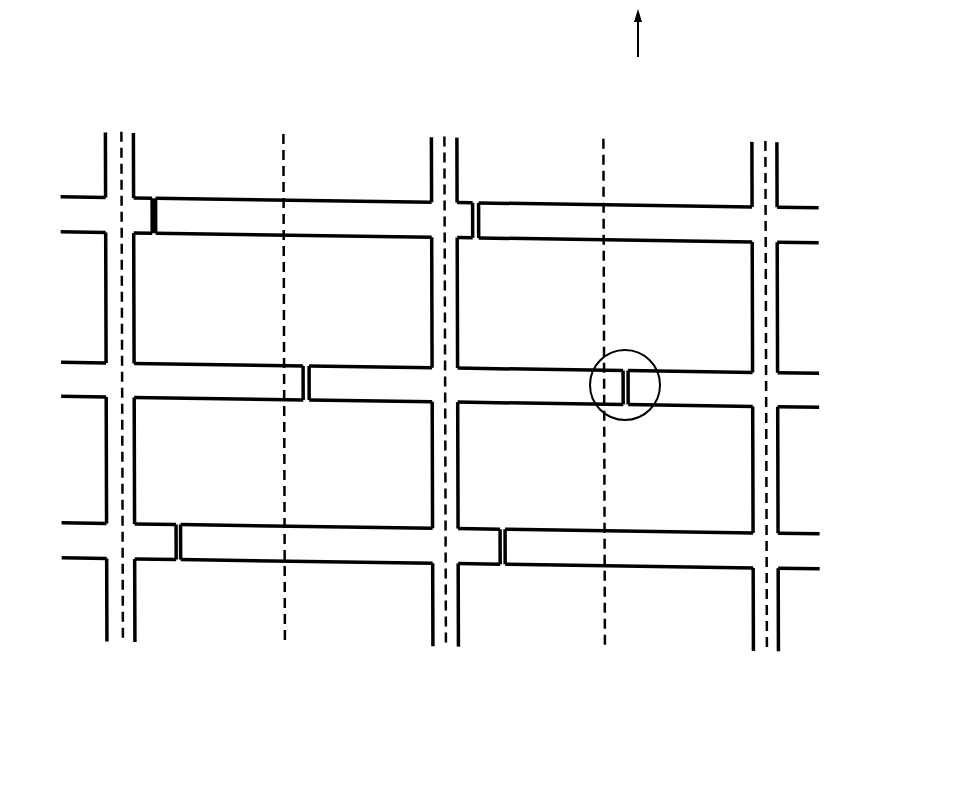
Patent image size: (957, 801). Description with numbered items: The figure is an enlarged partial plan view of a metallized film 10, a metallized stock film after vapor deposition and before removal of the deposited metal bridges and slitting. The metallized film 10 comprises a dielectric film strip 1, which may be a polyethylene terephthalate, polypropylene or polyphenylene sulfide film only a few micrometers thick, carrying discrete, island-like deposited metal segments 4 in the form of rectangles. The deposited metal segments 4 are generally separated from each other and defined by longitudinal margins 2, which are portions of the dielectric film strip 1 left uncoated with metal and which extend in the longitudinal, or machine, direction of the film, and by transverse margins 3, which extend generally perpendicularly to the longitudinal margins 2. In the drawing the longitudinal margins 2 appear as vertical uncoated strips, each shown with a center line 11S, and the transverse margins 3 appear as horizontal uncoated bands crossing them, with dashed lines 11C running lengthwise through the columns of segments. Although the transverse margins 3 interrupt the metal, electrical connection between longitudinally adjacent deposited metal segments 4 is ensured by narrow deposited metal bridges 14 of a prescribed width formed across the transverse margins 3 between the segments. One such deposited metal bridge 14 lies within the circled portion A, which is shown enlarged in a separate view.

The dielectric film strip 1 is at (90, 143).
The longitudinal margin 2 is at (137, 148).
The transverse margin 3 is at (355, 218).
The deposited metal segment 4 is at (82, 170).
The metallized film 10 is at (538, 100).
The center fold line 11C is at (481, 364).
The side fold line 11S is at (770, 160).
The deposited metal bridge 14 is at (157, 217).
The portion A is at (641, 352).